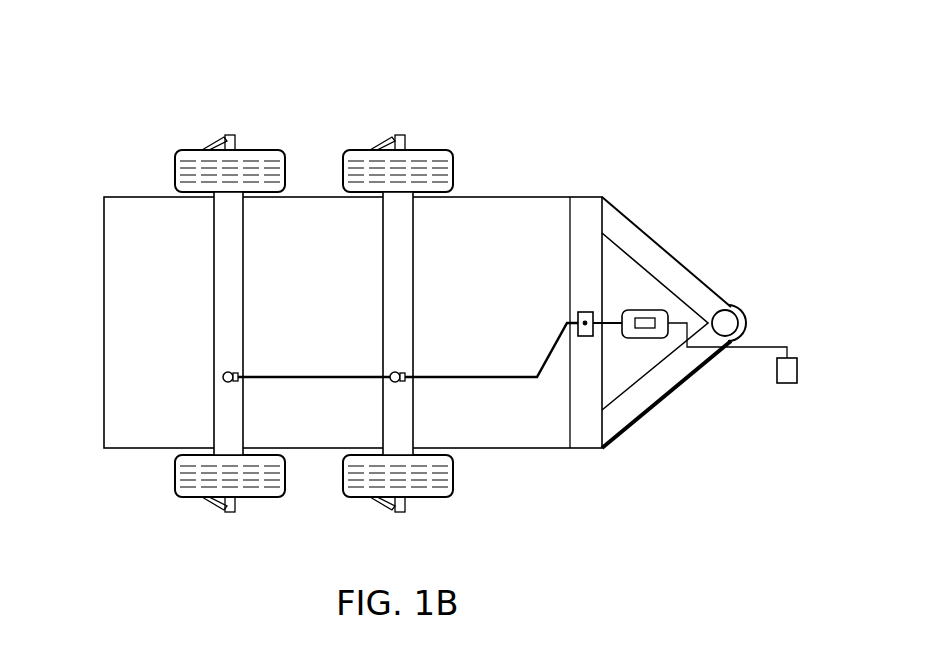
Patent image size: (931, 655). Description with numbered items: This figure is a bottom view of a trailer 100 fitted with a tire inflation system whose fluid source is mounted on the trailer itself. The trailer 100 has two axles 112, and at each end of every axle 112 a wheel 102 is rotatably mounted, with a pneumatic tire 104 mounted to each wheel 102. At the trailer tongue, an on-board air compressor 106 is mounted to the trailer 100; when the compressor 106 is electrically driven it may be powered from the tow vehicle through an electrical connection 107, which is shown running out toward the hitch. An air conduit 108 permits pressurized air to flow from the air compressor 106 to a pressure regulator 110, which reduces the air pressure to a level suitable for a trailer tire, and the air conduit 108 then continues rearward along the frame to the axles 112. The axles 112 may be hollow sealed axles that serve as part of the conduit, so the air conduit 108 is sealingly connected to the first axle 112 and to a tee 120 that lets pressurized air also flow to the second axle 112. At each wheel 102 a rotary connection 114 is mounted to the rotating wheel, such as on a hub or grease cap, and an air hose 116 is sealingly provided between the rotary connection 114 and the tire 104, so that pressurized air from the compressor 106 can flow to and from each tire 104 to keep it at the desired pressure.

The trailer 100 is at (193, 58).
The wheel 102 is at (142, 160).
The pneumatic tire 104 is at (276, 150).
The air compressor 106 is at (646, 308).
The electrical connection 107 is at (768, 345).
The air conduit 108 is at (478, 376).
The pressure regulator 110 is at (586, 311).
The axle 112 is at (212, 265).
The rotary connection 114 is at (231, 135).
The air hose 116 is at (212, 147).
The tee 120 is at (394, 370).